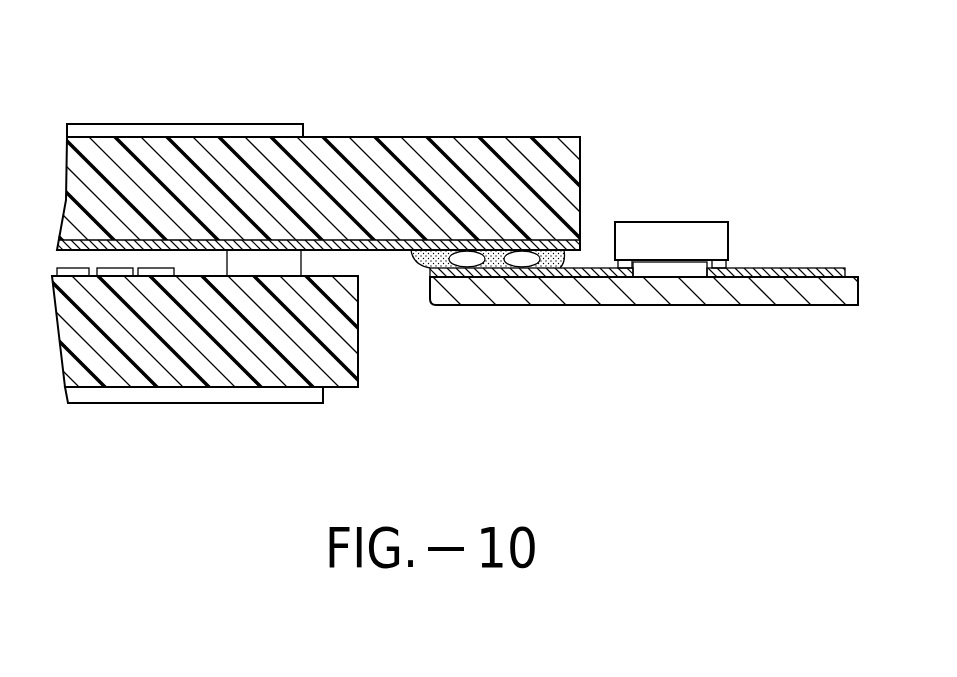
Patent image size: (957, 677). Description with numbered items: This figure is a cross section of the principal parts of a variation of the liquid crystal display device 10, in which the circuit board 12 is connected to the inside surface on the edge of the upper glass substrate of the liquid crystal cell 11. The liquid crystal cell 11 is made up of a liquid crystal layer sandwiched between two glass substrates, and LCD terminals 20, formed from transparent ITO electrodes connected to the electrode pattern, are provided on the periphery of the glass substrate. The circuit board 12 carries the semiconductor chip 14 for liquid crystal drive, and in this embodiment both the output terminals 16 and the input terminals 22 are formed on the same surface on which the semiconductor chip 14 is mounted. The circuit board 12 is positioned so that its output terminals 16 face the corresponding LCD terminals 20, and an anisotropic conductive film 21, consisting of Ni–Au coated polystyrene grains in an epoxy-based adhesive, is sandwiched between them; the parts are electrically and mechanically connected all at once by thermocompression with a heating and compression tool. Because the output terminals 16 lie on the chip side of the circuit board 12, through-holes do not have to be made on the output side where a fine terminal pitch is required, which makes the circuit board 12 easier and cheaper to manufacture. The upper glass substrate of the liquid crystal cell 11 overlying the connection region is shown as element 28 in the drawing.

The liquid crystal display device 10 is at (436, 92).
The liquid crystal cell 11 is at (346, 359).
The circuit board 12 is at (627, 306).
The semiconductor chip 14 is at (683, 223).
The output terminals 16 is at (502, 280).
The LCD terminals 20 is at (536, 240).
The anisotropic conductive film 21 is at (415, 268).
The input terminals 22 is at (790, 268).
The upper pressing block 28 is at (519, 137).